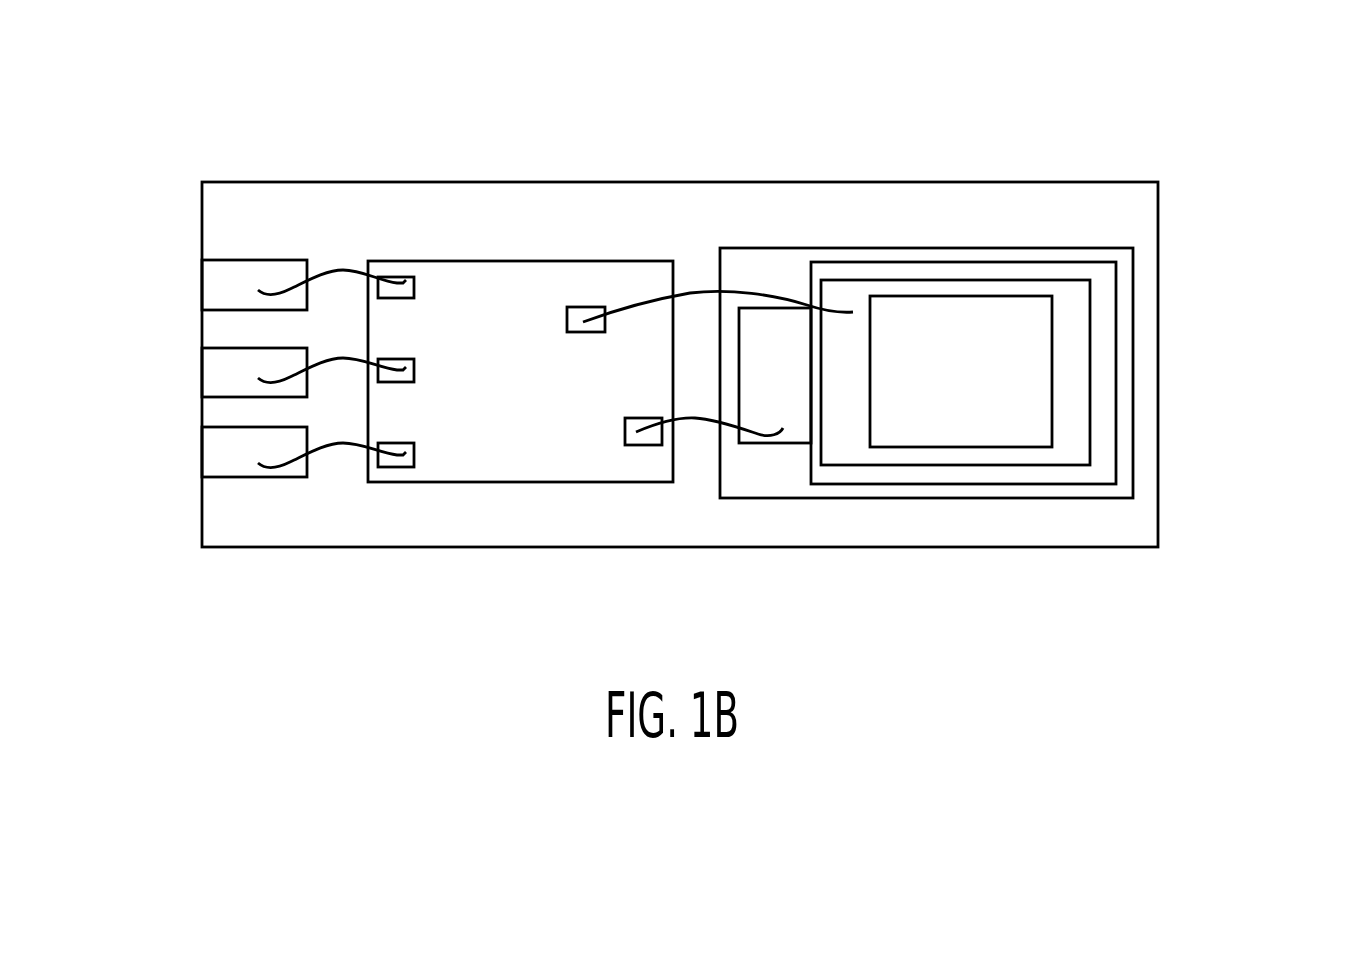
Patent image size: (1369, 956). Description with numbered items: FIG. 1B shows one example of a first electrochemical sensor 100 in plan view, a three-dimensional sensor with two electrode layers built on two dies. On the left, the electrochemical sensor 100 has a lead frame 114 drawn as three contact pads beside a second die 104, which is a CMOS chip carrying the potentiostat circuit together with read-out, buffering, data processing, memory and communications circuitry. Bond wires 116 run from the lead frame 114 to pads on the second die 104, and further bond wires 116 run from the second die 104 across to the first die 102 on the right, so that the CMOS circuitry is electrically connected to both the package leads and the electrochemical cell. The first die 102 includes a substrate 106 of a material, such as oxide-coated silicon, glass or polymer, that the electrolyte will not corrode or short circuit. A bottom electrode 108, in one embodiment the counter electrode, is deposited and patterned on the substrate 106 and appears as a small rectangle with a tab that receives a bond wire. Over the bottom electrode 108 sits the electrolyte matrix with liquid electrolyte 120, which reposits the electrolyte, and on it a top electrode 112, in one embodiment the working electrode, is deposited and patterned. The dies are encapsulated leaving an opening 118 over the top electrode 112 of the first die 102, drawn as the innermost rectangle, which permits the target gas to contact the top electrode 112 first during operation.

The first electrochemical sensor 100 is at (120, 223).
The first die 102 is at (967, 215).
The second die 104 is at (572, 215).
The substrate 106 is at (1113, 247).
The bottom electrode 108 is at (787, 398).
The top electrode 112 is at (1077, 308).
The lead frame 114 is at (218, 453).
The bond wires 116 is at (688, 418).
The opening 118 is at (1053, 420).
The electrolyte matrix with liquid electrolyte 120 is at (1127, 333).